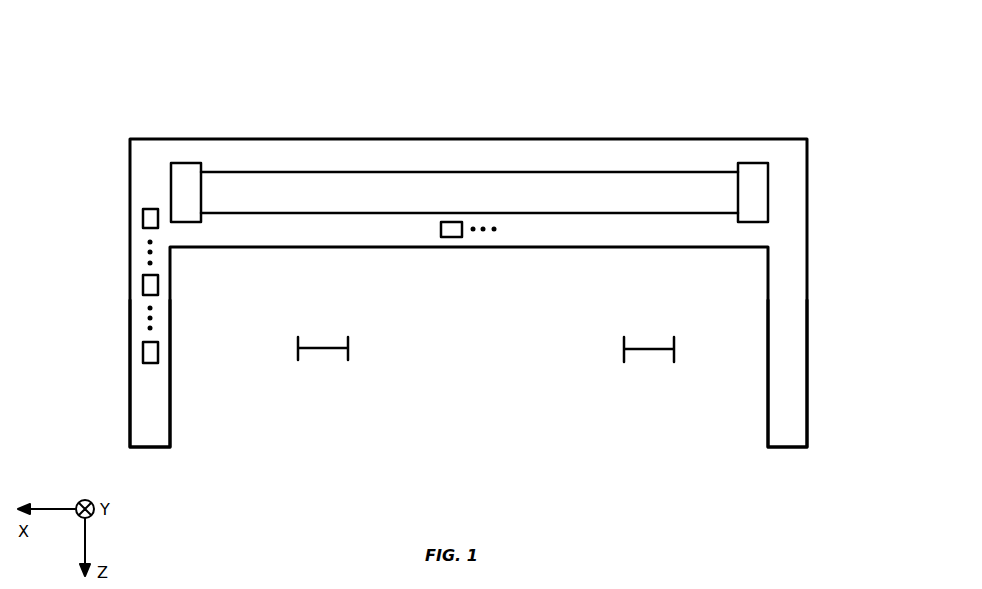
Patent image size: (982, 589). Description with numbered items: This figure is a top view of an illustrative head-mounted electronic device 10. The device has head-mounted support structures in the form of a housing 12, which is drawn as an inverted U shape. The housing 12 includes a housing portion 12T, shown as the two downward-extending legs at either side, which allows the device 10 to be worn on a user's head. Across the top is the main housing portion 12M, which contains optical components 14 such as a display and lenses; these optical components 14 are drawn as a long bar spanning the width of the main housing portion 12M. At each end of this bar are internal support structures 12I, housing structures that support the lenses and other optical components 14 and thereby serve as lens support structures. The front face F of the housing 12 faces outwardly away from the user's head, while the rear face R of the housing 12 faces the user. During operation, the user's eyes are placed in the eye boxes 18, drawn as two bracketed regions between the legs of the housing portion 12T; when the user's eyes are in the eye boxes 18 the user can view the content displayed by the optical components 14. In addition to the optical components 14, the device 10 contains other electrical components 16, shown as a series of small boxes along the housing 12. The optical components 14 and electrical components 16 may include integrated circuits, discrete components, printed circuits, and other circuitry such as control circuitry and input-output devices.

The electronic device 10 is at (858, 67).
The housing 12 is at (807, 170).
The housing portion 12T is at (142, 410).
The main housing portion 12M is at (103, 137).
The internal support structures 12I is at (172, 165).
The optical components 14 is at (696, 172).
The electrical components 16 is at (143, 342).
The eye boxes 18 is at (348, 352).
The front face F is at (197, 120).
The rear face R is at (213, 260).